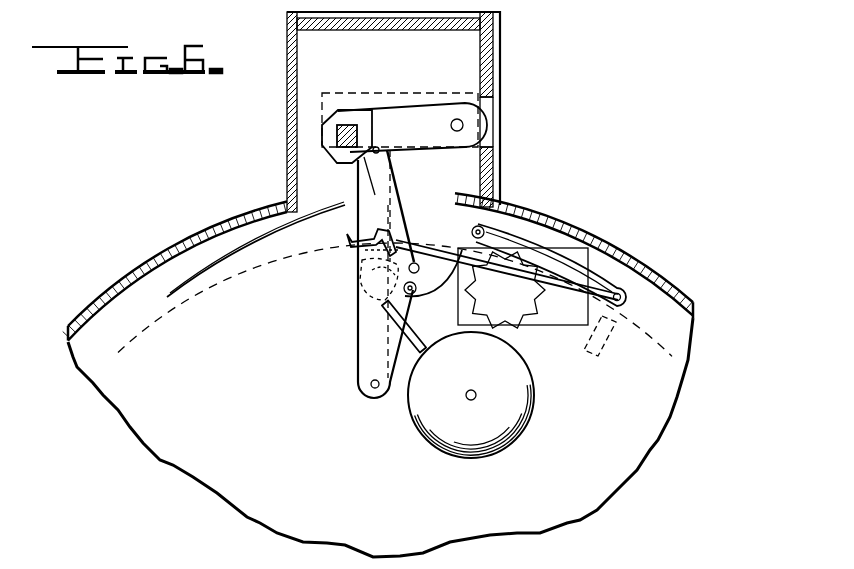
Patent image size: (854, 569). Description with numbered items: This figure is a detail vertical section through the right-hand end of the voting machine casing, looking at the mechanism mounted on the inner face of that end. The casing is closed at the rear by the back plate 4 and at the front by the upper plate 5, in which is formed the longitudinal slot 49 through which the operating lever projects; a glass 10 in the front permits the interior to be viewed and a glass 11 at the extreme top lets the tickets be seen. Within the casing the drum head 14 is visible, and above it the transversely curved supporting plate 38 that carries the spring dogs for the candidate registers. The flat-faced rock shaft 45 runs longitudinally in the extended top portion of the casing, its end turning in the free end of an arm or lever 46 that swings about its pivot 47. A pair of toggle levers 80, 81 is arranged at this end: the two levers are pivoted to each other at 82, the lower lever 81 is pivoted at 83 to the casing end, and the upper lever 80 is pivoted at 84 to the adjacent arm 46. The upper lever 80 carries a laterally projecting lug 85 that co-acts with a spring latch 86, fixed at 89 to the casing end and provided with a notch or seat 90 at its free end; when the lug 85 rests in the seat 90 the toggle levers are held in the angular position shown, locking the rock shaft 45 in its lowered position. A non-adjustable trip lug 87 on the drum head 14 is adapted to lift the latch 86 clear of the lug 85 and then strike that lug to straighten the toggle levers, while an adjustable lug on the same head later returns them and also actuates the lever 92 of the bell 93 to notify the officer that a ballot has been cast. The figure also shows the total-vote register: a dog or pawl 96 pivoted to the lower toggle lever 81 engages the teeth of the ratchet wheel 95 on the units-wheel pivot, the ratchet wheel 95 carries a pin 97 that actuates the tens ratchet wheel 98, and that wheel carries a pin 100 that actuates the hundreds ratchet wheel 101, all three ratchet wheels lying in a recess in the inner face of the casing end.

The back plate 4 is at (208, 233).
The upper front plate 5 is at (497, 78).
The glass 10 is at (673, 300).
The top glass 11 is at (402, 31).
The drum head 14 is at (157, 330).
The supporting plate 38 is at (232, 265).
The rock shaft 45 is at (345, 123).
The arms or levers 46 is at (380, 108).
The pivot 47 is at (458, 118).
The longitudinal slot 49 is at (487, 113).
The upper toggle lever 80 is at (403, 208).
The lower toggle lever 81 is at (408, 348).
The toggle pivot 82 is at (418, 262).
The lower lever pivot 83 is at (374, 390).
The upper lever pivot 84 is at (412, 127).
The lug 85 is at (370, 262).
The spring latch 86 is at (473, 345).
The non-adjustable trip lug 87 is at (610, 350).
The latch fixing point 89 is at (614, 296).
The notch or seat 90 is at (471, 238).
The bell operating lever 92 is at (357, 350).
The bell 93 is at (440, 456).
The units ratchet wheel 95 is at (462, 280).
The dog or pawl 96 is at (500, 212).
The pin 97 is at (504, 308).
The tens ratchet wheel 98 is at (533, 322).
The pin 100 is at (477, 393).
The hundreds ratchet wheel 101 is at (572, 270).